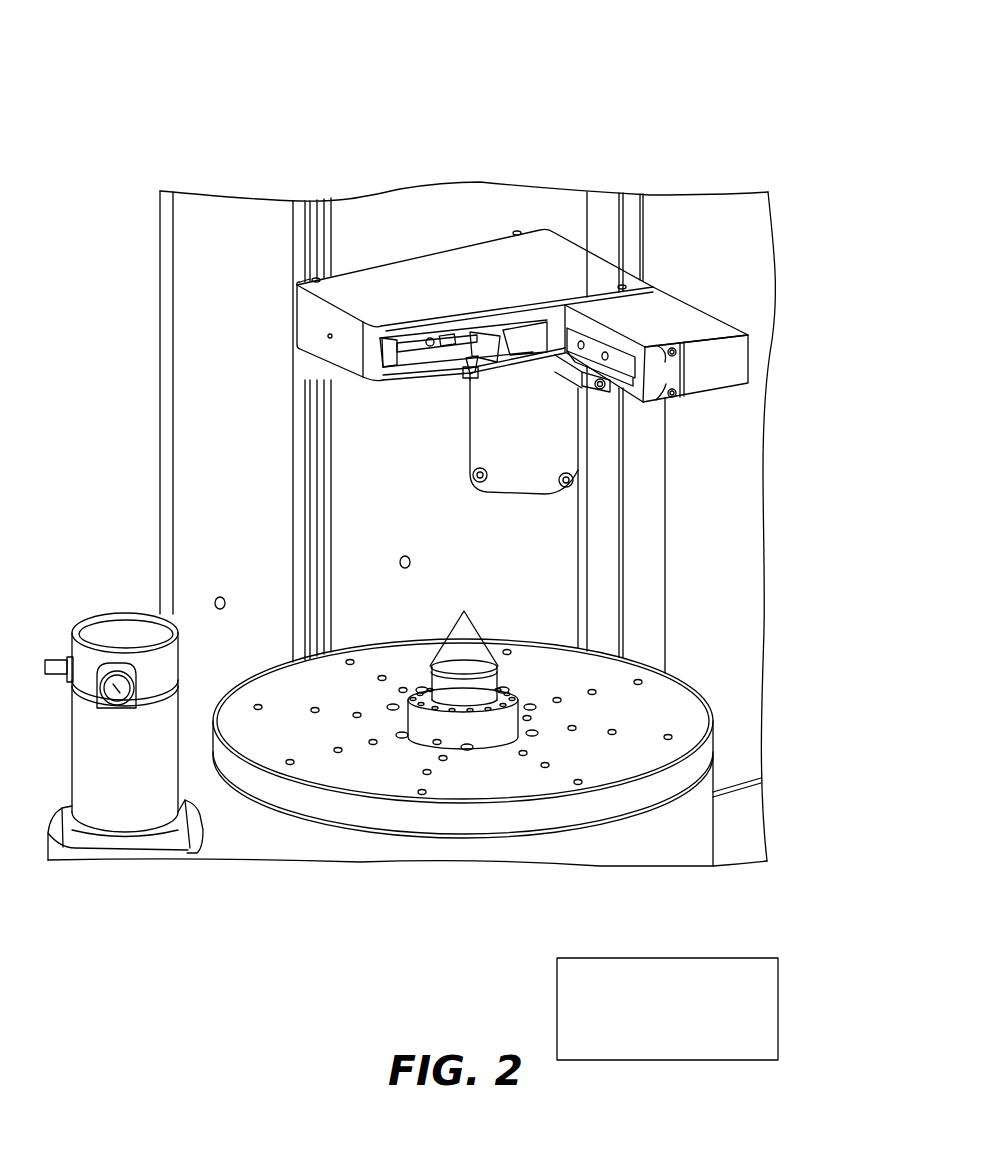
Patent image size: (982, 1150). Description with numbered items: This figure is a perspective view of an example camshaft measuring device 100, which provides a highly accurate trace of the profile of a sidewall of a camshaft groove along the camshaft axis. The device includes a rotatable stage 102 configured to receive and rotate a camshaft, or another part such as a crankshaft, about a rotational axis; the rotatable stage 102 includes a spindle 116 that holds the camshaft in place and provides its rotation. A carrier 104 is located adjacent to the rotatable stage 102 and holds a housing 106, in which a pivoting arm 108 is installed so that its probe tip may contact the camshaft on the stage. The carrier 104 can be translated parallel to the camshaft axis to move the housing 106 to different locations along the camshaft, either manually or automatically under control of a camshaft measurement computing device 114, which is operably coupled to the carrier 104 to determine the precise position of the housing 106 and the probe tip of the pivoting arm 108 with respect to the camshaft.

The camshaft measuring device 100 is at (773, 72).
The rotatable stage 102 is at (353, 812).
The carrier 104 is at (735, 250).
The housing 106 is at (376, 284).
The pivoting arm 108 is at (650, 320).
The camshaft measurement computing device 114 is at (667, 877).
The spindle 116 is at (482, 724).